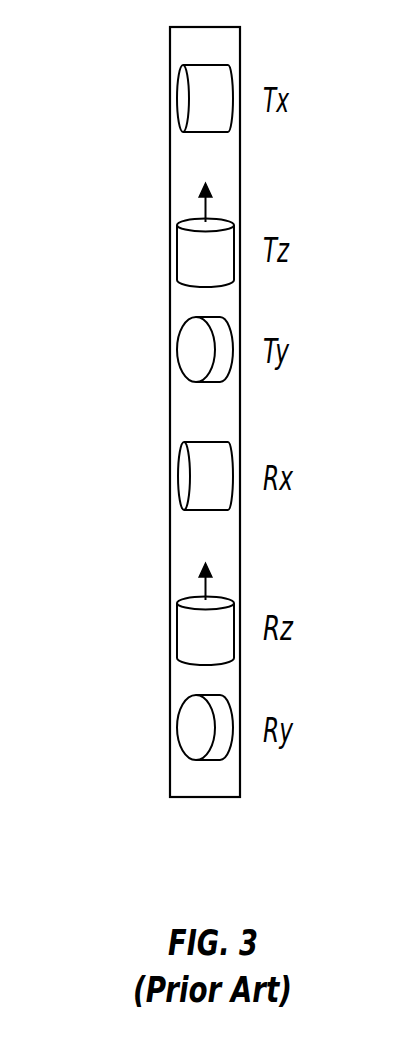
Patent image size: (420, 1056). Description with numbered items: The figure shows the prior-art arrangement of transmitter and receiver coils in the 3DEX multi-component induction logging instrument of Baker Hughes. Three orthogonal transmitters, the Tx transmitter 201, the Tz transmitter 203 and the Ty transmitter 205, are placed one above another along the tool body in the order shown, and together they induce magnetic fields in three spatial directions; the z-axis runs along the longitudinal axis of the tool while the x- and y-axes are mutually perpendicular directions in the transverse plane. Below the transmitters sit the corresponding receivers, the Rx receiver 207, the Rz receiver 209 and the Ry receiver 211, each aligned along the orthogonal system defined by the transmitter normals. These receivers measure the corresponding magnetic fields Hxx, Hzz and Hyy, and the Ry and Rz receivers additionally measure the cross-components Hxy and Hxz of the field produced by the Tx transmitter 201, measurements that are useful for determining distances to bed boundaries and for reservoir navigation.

The Tx transmitter 201 is at (184, 98).
The Tz transmitter 203 is at (184, 254).
The Ty transmitter 205 is at (185, 353).
The Rx receiver coil 207 is at (185, 480).
The Rz receiver coil 209 is at (184, 634).
The Rx receiver 211 is at (185, 730).